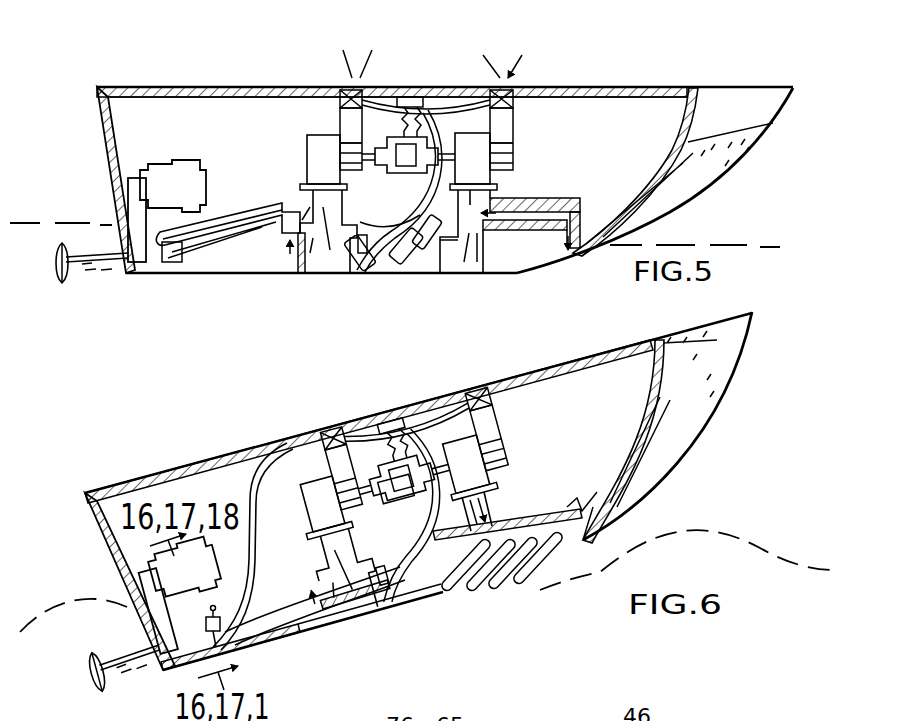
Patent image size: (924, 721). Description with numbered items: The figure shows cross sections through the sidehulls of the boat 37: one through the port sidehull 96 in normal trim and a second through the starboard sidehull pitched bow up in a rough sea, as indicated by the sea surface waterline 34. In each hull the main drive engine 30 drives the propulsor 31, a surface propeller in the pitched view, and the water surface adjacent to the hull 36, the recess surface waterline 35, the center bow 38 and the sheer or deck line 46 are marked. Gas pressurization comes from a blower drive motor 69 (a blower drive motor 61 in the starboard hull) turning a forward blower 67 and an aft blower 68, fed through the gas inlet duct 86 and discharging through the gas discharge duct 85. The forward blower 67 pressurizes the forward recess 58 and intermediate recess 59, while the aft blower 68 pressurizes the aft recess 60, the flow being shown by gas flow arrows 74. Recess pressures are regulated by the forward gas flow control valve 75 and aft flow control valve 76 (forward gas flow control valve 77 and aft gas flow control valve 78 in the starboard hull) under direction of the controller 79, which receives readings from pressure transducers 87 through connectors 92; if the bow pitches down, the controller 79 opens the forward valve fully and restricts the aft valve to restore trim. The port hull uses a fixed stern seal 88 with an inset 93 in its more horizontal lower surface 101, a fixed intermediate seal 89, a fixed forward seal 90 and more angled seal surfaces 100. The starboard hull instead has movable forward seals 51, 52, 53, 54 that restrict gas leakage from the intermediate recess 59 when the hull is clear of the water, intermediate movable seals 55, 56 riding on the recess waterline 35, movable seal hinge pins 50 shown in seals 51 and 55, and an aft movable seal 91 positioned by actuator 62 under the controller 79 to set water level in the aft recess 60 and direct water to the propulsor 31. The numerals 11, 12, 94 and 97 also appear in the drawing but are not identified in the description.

In FIG. 5, the section line 11- 11 is at (325, 75).
In FIG. 6, the section line 11- 11 is at (300, 446).
In FIG. 5, the section line 12- 12 is at (500, 75).
In FIG. 6, the section line 12- 12 is at (460, 418).
In FIG. 5, the main drive engine 30 is at (167, 211).
In FIG. 6, the main drive engine 30 is at (185, 569).
In FIG. 5, the propulsor 31 is at (88, 254).
In FIG. 6, the propulsor 31 is at (118, 668).
In FIG. 5, the sea surface waterline 34 is at (52, 223).
In FIG. 6, the sea surface waterline 34 is at (58, 606).
In FIG. 5, the recess surface waterline 35 is at (246, 272).
In FIG. 6, the recess surface waterline 35 is at (376, 604).
In FIG. 5, the adjacent to hull water surface 36 is at (86, 270).
In FIG. 6, the adjacent to hull water surface 36 is at (108, 686).
In FIG. 5, the boat 37 is at (740, 87).
In FIG. 6, the boat 37 is at (636, 344).
In FIG. 5, the center bow 38 is at (680, 183).
In FIG. 6, the center bow 38 is at (650, 437).
In FIG. 5, the sheer or deck line 46 is at (196, 87).
In FIG. 6, the sheer or deck line 46 is at (140, 478).
In FIG. 6, the movable seal hinge pins 50 is at (538, 520).
In FIG. 6, the movable forward seal 51 is at (550, 572).
In FIG. 6, the movable forward seal 52 is at (504, 596).
In FIG. 6, the movable forward seal 53 is at (478, 608).
In FIG. 6, the movable forward seal 54 is at (450, 598).
In FIG. 6, the intermediate movable seal 55 is at (318, 612).
In FIG. 6, the intermediate movable seal 56 is at (264, 628).
In FIG. 5, the forward recess 58 is at (576, 256).
In FIG. 6, the forward recess 58 is at (578, 503).
In FIG. 5, the intermediate recess 59 is at (455, 266).
In FIG. 6, the intermediate recess 59 is at (400, 586).
In FIG. 5, the aft recess 60 is at (302, 268).
In FIG. 6, the aft recess 60 is at (296, 566).
In FIG. 6, the blower drive motor 61 is at (396, 489).
In FIG. 6, the actuator 62 is at (144, 636).
In FIG. 5, the forward blower 67 is at (468, 203).
In FIG. 6, the forward blower 67 is at (514, 468).
In FIG. 5, the aft blower 68 is at (307, 150).
In FIG. 6, the aft blower 68 is at (306, 508).
In FIG. 5, the blower drive motor 69 is at (432, 113).
In FIG. 5, the gas flow arrows 74 is at (522, 78).
In FIG. 6, the gas flow arrows 74 is at (360, 400).
In FIG. 5, the forward gas flow control valve 75 is at (514, 105).
In FIG. 5, the aft flow control valve 76 is at (339, 100).
In FIG. 6, the forward gas flow control valve 77 is at (520, 408).
In FIG. 6, the aft gas flow control valve 78 is at (268, 464).
In FIG. 5, the controller 79 is at (410, 97).
In FIG. 6, the controller 79 is at (400, 420).
In FIG. 5, the gas discharge duct 85 is at (404, 168).
In FIG. 6, the gas discharge duct 85 is at (504, 496).
In FIG. 5, the gas inlet duct 86 is at (361, 100).
In FIG. 6, the gas inlet duct 86 is at (560, 416).
In FIG. 5, the pressure transducers 87 is at (389, 213).
In FIG. 6, the pressure transducers 87 is at (406, 536).
In FIG. 5, the fixed stern seal 88 is at (228, 262).
In FIG. 5, the fixed intermediate seal 89 is at (372, 270).
In FIG. 5, the fixed forward seal 90 is at (556, 270).
In FIG. 6, the aft movable seal 91 is at (168, 675).
In FIG. 5, the connectors 92 is at (399, 191).
In FIG. 6, the connectors 92 is at (246, 464).
In FIG. 5, the inset 93 is at (168, 266).
In FIG. 5, the exhaust pipe 94 is at (228, 212).
In FIG. 5, the port sidehull 96 is at (672, 152).
In FIG. 5, the transom 97 is at (103, 135).
In FIG. 6, the transom 97 is at (92, 542).
In FIG. 5, the more angled seal surfaces 100 is at (262, 265).
In FIG. 5, the more horizontal lower surface 101 is at (134, 276).